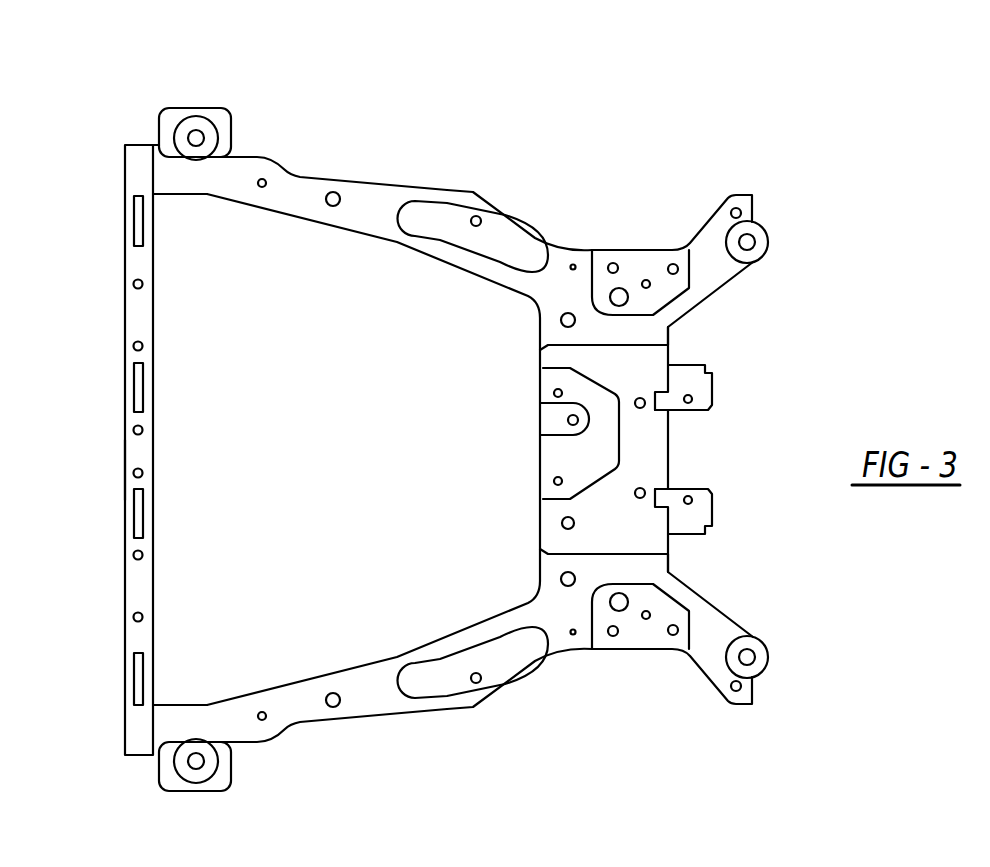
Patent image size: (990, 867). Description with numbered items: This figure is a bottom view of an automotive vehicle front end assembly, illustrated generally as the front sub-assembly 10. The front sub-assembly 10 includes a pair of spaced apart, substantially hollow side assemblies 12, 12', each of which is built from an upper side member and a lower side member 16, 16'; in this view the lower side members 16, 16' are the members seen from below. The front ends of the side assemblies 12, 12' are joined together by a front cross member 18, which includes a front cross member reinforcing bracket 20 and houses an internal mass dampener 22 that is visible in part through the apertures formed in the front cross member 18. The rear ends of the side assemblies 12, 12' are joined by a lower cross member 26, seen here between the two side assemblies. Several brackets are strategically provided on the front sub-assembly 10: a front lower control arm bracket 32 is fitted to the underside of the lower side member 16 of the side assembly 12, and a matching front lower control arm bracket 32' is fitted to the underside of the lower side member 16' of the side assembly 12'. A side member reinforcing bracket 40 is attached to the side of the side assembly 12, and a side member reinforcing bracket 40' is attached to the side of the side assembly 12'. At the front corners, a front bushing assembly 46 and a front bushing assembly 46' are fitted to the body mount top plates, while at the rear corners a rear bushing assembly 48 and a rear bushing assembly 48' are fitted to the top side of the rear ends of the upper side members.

The front sub-assembly 10 is at (648, 176).
The side assembly 12 is at (453, 231).
The side assembly 12' is at (453, 648).
The lower side member 16 is at (373, 256).
The lower side member 16' is at (373, 684).
The front cross member 18 is at (125, 402).
The front cross member reinforcing bracket 20 is at (130, 460).
The internal mass dampener 22 is at (138, 228).
The lower cross member 26 is at (560, 410).
The front lower control arm bracket 32 is at (477, 217).
The front lower control arm bracket 32' is at (480, 684).
The side member reinforcing bracket 40 is at (519, 185).
The side member reinforcing bracket 40' is at (519, 717).
The front bushing assembly 46 is at (195, 106).
The front bushing assembly 46' is at (195, 796).
The rear bushing assembly 48 is at (759, 217).
The rear bushing assembly 48' is at (761, 683).